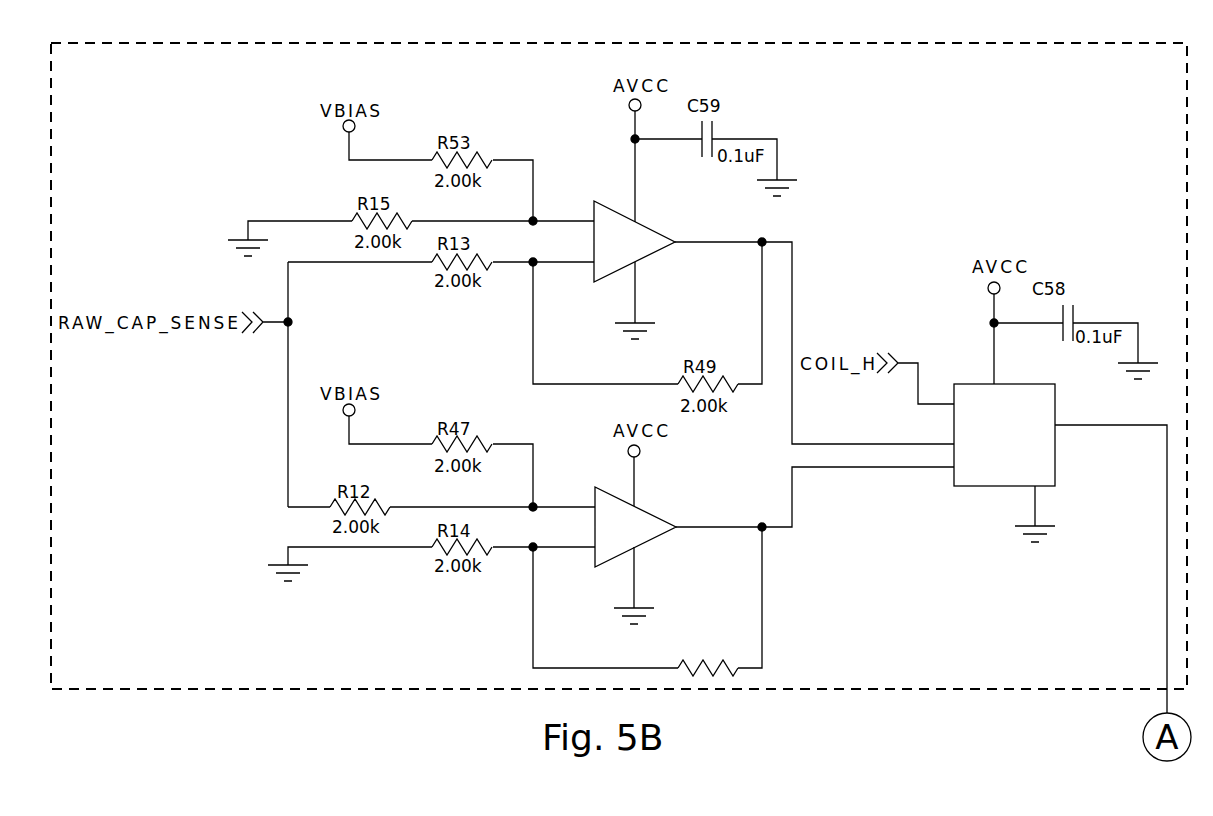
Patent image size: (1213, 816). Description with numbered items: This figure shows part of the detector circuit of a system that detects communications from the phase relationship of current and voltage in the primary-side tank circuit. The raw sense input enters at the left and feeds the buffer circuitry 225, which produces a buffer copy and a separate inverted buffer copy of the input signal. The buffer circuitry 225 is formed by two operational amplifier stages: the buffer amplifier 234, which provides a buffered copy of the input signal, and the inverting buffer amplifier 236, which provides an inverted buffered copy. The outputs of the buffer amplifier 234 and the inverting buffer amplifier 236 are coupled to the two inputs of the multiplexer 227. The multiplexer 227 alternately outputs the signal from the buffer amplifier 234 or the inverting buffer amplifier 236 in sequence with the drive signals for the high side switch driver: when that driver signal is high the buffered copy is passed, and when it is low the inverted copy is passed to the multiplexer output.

The inverting buffer amplifier 236 is at (590, 178).
The buffer circuitry 225 is at (818, 232).
The buffer amplifier 234 is at (503, 603).
The multiplexer 227 is at (986, 487).